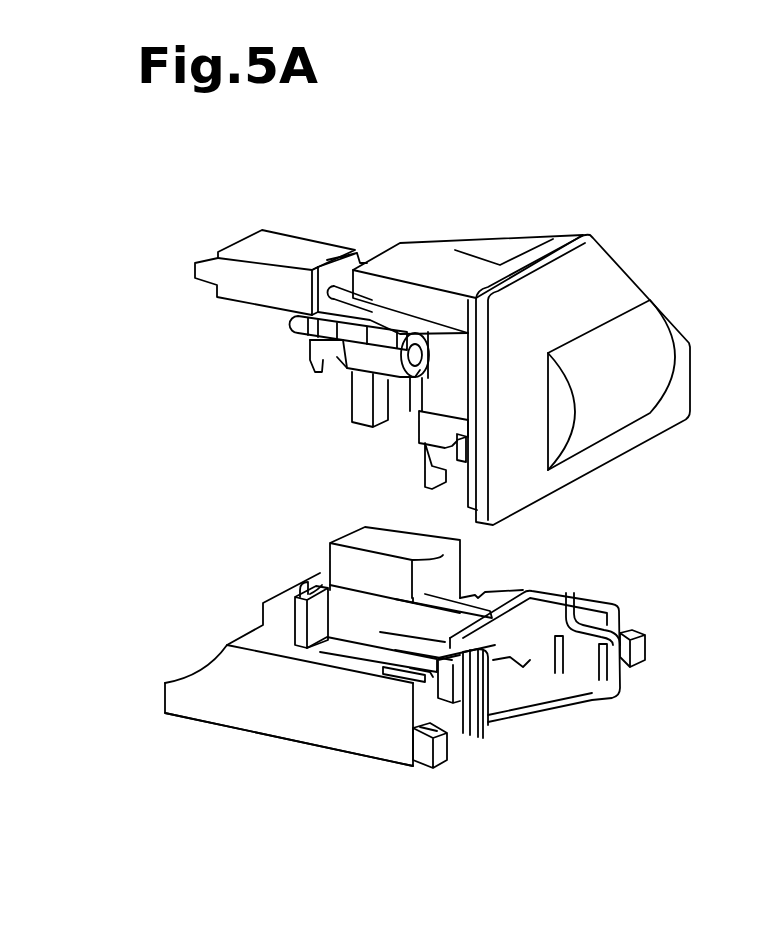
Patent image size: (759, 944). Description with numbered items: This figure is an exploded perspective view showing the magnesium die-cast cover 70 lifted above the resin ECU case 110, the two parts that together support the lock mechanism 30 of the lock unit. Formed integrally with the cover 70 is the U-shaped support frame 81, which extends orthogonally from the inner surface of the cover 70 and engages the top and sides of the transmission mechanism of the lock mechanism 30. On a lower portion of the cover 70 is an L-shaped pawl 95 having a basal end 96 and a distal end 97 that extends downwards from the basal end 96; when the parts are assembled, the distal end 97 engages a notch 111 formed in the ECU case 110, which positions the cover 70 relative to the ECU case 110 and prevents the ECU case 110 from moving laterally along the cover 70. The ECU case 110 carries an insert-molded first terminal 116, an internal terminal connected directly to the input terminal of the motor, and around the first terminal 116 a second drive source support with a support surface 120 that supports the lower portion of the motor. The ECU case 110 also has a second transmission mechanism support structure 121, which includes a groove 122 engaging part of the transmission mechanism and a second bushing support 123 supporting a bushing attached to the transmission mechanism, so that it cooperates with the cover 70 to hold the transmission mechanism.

The lock mechanism 30 is at (293, 369).
The cover 70 is at (600, 236).
The support frame 81 is at (424, 244).
The pawl 95 is at (447, 480).
The basal end 96 is at (468, 466).
The distal end 97 is at (426, 478).
The ECU case 110 is at (187, 672).
The notch 111 is at (411, 728).
The first terminal 116 is at (600, 643).
The support surface 120 is at (567, 683).
The second transmission mechanism support structure 121 is at (355, 665).
The groove 122 is at (347, 642).
The second bushing support 123 is at (322, 590).